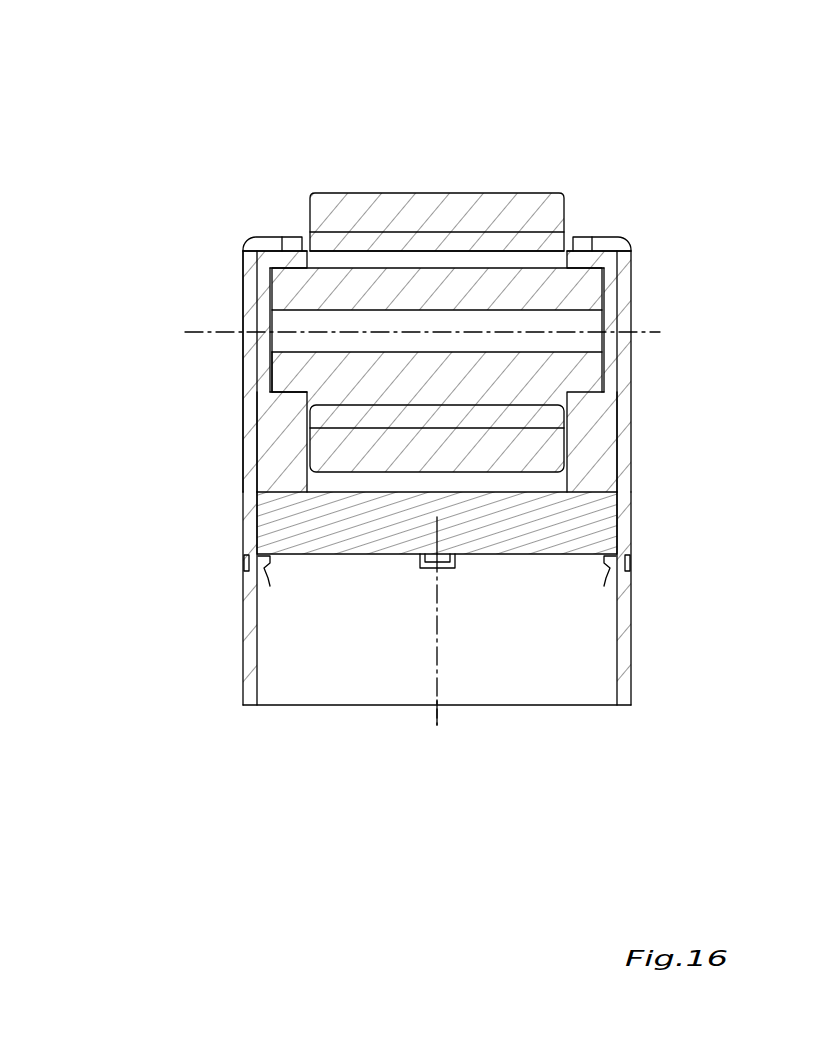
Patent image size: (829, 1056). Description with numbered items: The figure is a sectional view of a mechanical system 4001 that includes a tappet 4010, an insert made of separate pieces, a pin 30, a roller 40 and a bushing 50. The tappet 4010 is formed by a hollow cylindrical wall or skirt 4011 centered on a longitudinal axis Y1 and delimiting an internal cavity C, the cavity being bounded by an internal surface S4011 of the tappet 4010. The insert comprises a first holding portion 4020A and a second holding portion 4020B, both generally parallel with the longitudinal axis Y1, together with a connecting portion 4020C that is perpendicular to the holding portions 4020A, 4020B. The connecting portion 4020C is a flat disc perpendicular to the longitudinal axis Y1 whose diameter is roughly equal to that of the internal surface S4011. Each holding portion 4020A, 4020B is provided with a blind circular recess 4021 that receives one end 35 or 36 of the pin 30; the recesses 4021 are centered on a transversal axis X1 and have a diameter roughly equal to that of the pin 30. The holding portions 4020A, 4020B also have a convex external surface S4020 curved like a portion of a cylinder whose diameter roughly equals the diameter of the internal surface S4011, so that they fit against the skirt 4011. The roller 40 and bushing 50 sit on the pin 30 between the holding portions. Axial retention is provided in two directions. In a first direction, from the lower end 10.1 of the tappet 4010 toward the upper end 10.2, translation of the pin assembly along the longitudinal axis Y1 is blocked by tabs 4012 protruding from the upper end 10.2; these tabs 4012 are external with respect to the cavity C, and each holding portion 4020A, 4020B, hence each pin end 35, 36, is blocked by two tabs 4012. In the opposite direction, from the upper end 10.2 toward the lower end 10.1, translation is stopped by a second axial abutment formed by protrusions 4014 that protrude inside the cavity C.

The mechanical system 4001 is at (426, 394).
The tappet 4010 is at (627, 415).
The convex external surface S4020 is at (247, 427).
The blind circular recess 4021 is at (278, 293).
The first holding portion 4020A is at (278, 455).
The second holding portion 4020B is at (593, 457).
The connecting portion 4020C is at (565, 532).
The tabs 4012 is at (287, 245).
The upper end 10.2 is at (610, 242).
The lower end 10.1 is at (623, 707).
The roller 40 is at (505, 205).
The bushing 50 is at (458, 247).
The pin 30 is at (593, 288).
The pin end 35 is at (285, 378).
The pin end 36 is at (590, 378).
The transversal axis X1 is at (448, 337).
The longitudinal axis Y1 is at (438, 730).
The internal cavity C is at (411, 621).
The skirt 4011 is at (245, 663).
The internal surface S4011 is at (259, 637).
The protrusions 4014 is at (265, 588).